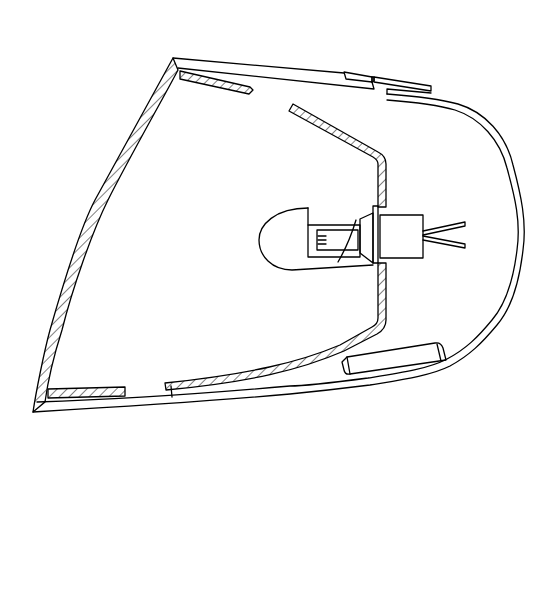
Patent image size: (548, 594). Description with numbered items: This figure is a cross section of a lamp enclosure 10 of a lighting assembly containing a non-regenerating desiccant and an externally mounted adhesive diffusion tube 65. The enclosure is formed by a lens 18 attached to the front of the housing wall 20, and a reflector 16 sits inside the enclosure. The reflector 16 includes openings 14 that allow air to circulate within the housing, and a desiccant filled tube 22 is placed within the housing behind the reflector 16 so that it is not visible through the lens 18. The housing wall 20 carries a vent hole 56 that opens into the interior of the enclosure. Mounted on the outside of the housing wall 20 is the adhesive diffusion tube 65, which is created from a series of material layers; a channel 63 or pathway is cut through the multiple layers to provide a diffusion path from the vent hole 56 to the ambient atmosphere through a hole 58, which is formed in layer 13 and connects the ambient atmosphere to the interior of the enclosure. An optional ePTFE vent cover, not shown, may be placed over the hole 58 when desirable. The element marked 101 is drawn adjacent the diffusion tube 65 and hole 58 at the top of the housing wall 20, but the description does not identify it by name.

The lamp enclosure 10 is at (126, 59).
The layer 13 is at (346, 74).
The openings 14 is at (268, 98).
The reflector 16 is at (302, 357).
The lens 18 is at (72, 280).
The housing wall 20 is at (475, 343).
The desiccant filled tube 22 is at (380, 365).
The vent hole 56 is at (381, 92).
The hole 58 is at (402, 77).
The channel 63 is at (372, 80).
The externally mounted adhesive diffusion tube 65 is at (389, 76).
The housing flange 101 is at (431, 93).